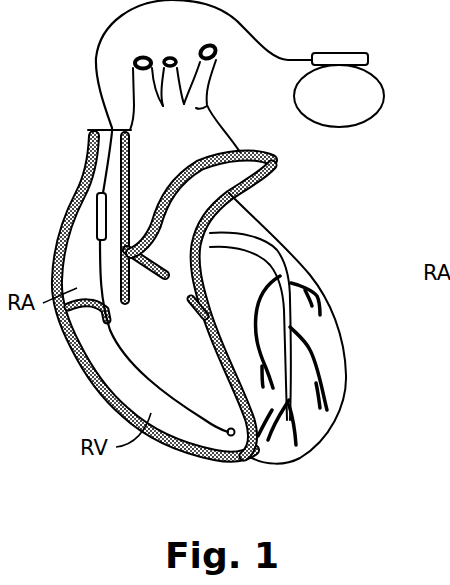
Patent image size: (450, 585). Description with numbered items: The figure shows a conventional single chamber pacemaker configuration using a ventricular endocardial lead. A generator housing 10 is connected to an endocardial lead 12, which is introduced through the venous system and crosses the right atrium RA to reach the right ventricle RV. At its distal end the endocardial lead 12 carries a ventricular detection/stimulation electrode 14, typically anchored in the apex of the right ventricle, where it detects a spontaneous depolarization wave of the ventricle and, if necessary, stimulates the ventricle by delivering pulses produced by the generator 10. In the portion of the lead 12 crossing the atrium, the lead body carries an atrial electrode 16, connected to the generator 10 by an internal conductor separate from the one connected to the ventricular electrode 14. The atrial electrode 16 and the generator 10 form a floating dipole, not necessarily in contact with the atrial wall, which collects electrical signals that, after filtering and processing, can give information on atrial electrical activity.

The generator housing 10 is at (366, 93).
The endocardial lead 12 is at (96, 60).
The ventricular detection/stimulation electrode 14 is at (211, 456).
The atrial electrode 16 is at (96, 213).